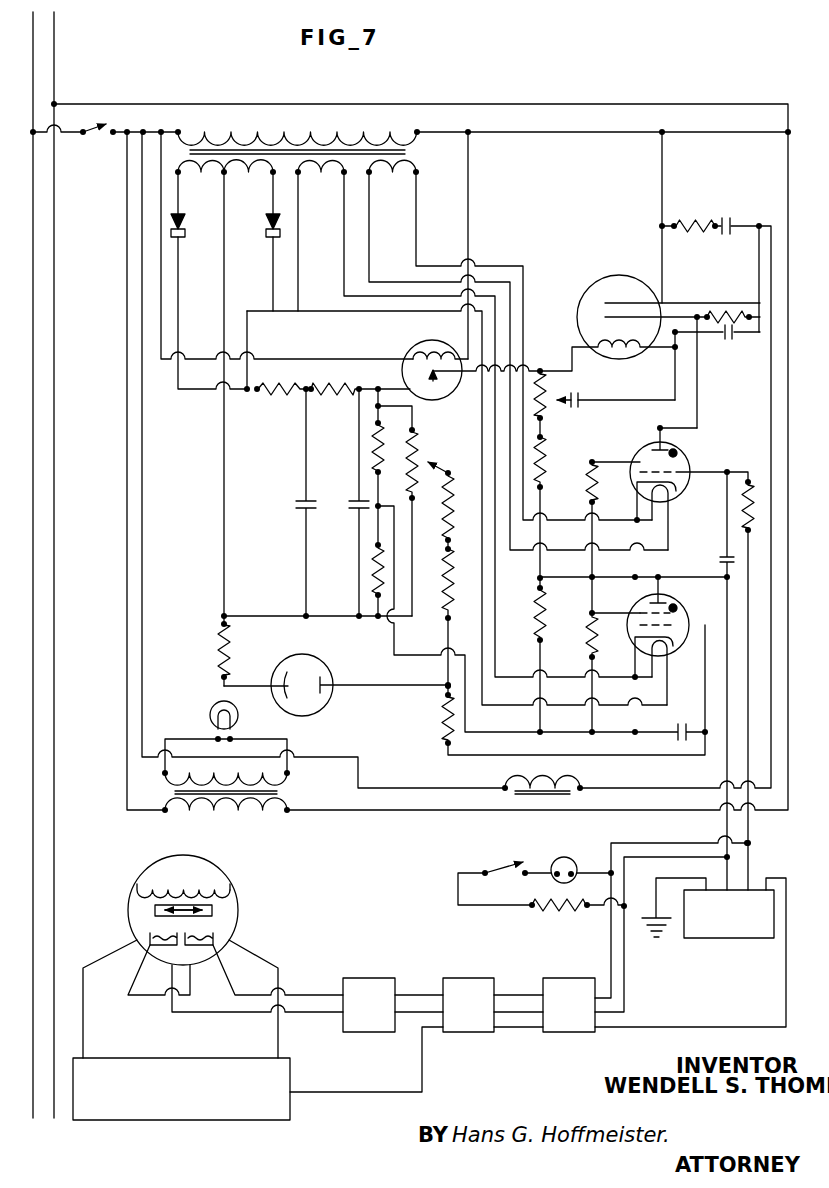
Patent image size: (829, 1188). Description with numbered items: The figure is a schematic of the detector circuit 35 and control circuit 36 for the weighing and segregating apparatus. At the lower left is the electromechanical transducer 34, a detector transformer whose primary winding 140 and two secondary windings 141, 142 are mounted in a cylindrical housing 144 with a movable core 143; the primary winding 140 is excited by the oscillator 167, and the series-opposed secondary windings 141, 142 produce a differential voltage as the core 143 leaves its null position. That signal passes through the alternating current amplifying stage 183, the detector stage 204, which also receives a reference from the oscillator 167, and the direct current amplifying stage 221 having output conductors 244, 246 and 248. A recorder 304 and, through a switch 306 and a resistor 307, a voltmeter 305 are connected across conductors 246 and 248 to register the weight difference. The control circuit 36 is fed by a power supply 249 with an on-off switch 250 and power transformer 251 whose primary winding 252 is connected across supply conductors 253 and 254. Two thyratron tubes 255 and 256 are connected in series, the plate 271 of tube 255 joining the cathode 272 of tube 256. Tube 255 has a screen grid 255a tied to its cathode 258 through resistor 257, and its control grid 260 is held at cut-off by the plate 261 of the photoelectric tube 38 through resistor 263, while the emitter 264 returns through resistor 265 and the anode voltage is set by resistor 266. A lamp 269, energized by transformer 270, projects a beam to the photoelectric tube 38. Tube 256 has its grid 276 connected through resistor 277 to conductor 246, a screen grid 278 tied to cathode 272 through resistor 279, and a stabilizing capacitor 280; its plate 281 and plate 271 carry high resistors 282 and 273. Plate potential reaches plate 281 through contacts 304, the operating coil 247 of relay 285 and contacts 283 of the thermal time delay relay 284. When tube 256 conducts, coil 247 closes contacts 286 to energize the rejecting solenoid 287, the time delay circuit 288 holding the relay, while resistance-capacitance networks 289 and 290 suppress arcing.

The supply conductor 253 is at (54, 27).
The supply conductor 254 is at (33, 47).
The power supply 249 is at (150, 82).
The on-off switch 250 is at (97, 138).
The power transformer 251 is at (393, 130).
The primary winding 252 is at (272, 130).
The control circuit 36 is at (631, 104).
The resistance-capacitance network 289 is at (724, 222).
The relay 285 is at (610, 300).
The contacts 286 is at (606, 318).
The contacts / recorder 304 is at (600, 326).
The thermal time delay relay 284 is at (430, 342).
The contacts 283 is at (434, 381).
The operating coil 247 is at (622, 345).
The resistance-capacitance time delay circuit 288 is at (557, 385).
The resistance-capacitance network 290 is at (739, 343).
The control grid 260 is at (414, 441).
The resistor 266 is at (473, 453).
The resistor 263 is at (443, 722).
The resistor 282 is at (550, 455).
The resistor 273 is at (540, 638).
The resistor 279 is at (590, 478).
The resistor 257 is at (587, 637).
The screen grid 278 is at (647, 463).
The plate 281 is at (669, 446).
The thyratron tube 256 is at (678, 452).
The grid 276 is at (680, 470).
The cathode 272 is at (672, 491).
The resistor 277 is at (740, 515).
The capacitor 280 is at (722, 553).
The plate 271 is at (666, 591).
The screen grid 255a is at (645, 612).
The thyratron tube 255 is at (676, 606).
The cathode 258 is at (652, 632).
The photoelectric tube 38 is at (318, 712).
The emitter 264 is at (278, 678).
The plate 261 is at (330, 677).
The resistor 265 is at (214, 657).
The lamp 269 is at (210, 710).
The transformer 270 is at (286, 788).
The rejecting solenoid 287 is at (547, 780).
The electromechanical transducer 34 is at (232, 865).
The primary winding 140 is at (143, 885).
The cylindrical housing 144 is at (232, 890).
The core 143 is at (155, 908).
The secondary winding 142 is at (150, 934).
The secondary winding 141 is at (213, 934).
The oscillator 167 is at (185, 1100).
The alternating current amplifying stage 183 is at (390, 1018).
The detector stage 204 is at (490, 1018).
The direct current amplifying stage 221 is at (590, 1018).
The detector circuit 35 is at (421, 991).
The output conductor 246 is at (611, 963).
The output conductor 248 is at (624, 985).
The output conductor 244 is at (741, 1027).
The voltmeter 305 is at (564, 857).
The switch 306 is at (515, 864).
The resistor 307 is at (560, 912).